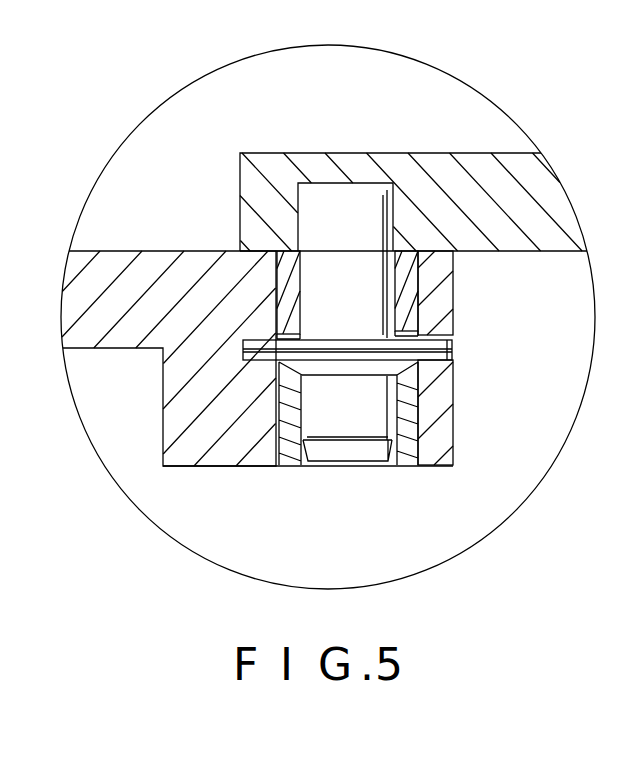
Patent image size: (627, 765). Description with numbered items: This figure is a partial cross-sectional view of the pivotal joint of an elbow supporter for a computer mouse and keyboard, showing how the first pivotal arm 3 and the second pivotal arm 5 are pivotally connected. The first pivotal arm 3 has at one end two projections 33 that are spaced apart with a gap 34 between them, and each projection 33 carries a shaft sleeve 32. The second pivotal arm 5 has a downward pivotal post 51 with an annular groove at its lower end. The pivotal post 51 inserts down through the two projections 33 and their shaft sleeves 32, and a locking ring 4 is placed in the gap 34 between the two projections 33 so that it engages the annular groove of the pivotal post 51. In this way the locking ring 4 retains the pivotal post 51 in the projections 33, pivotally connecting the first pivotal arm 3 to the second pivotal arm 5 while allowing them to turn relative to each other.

The first pivotal arm 3 is at (162, 272).
The locking ring 4 is at (455, 348).
The second pivotal arm 5 is at (443, 168).
The shaft sleeve 32 is at (412, 297).
The projection 33 is at (440, 265).
The gap 34 is at (443, 358).
The pivotal post 51 is at (347, 200).